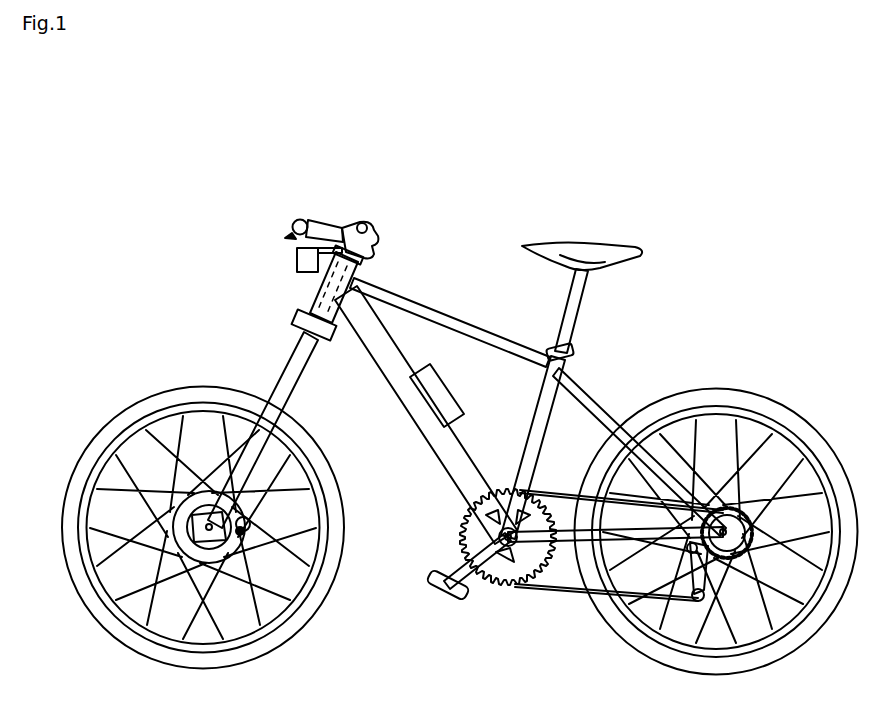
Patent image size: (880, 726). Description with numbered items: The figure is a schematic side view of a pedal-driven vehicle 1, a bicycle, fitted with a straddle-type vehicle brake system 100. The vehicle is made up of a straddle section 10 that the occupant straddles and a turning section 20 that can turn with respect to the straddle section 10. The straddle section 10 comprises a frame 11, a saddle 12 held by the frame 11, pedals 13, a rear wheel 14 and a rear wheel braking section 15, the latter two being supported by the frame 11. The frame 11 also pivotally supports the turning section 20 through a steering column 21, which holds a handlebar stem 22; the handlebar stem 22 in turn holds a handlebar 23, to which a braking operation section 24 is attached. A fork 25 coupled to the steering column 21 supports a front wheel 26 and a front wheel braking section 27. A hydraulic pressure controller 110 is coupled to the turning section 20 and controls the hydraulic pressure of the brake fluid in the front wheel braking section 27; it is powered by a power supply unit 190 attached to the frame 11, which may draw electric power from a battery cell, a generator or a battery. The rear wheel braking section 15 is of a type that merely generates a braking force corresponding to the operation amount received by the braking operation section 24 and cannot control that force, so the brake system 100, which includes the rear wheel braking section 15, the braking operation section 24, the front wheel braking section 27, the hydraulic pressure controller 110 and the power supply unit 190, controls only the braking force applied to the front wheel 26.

The pedal-driven vehicle 1 is at (757, 104).
The straddle section 10 is at (427, 278).
The frame 11 is at (478, 330).
The saddle 12 is at (605, 250).
The pedals 13 is at (447, 592).
The rear wheel 14 is at (795, 410).
The rear wheel braking section 15 is at (737, 476).
The turning section 20 is at (212, 276).
The steering column 21 is at (322, 293).
The handlebar stem 22 is at (344, 228).
The handlebar 23 is at (300, 218).
The braking operation section 24 is at (286, 236).
The fork 25 is at (283, 388).
The front wheel 26 is at (128, 420).
The front wheel braking section 27 is at (252, 545).
The straddle-type vehicle brake system 100 is at (402, 200).
The hydraulic pressure controller 110 is at (297, 263).
The power supply unit 190 is at (447, 398).